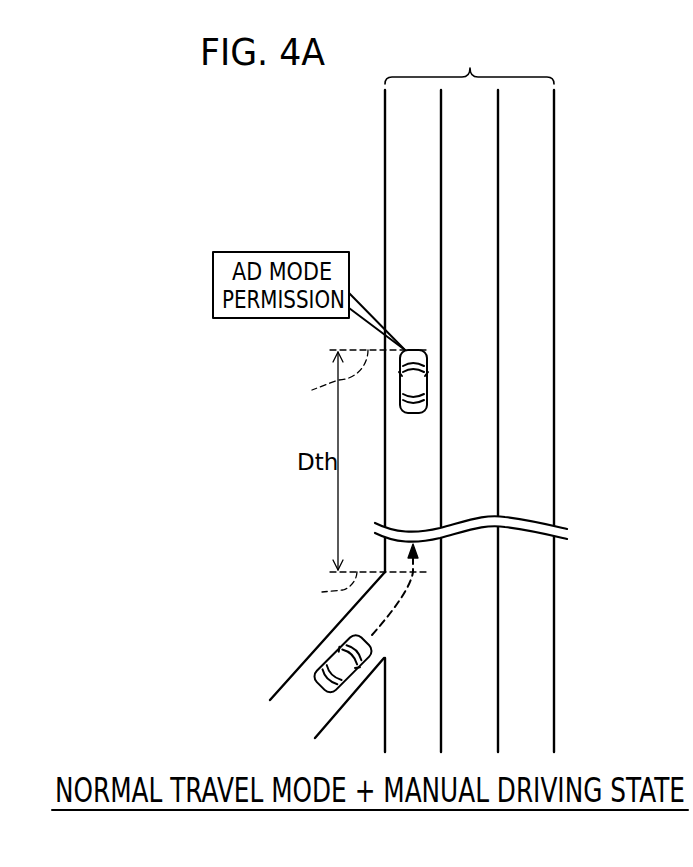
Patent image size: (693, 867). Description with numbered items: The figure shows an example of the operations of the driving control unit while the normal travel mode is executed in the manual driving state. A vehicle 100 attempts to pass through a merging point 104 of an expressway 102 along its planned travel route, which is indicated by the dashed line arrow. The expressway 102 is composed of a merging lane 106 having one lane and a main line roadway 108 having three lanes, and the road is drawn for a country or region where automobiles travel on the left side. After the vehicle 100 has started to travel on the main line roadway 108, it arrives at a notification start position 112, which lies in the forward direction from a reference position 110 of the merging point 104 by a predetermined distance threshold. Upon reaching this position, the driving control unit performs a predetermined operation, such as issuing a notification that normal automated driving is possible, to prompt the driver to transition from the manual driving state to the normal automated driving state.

The vehicle 100 is at (427, 381).
The expressway 102 is at (288, 147).
The merging point 104 is at (566, 579).
The merging lane 106 is at (307, 700).
The main line roadway 108 is at (469, 62).
The reference position 110 is at (358, 587).
The notification start position 112 is at (352, 376).